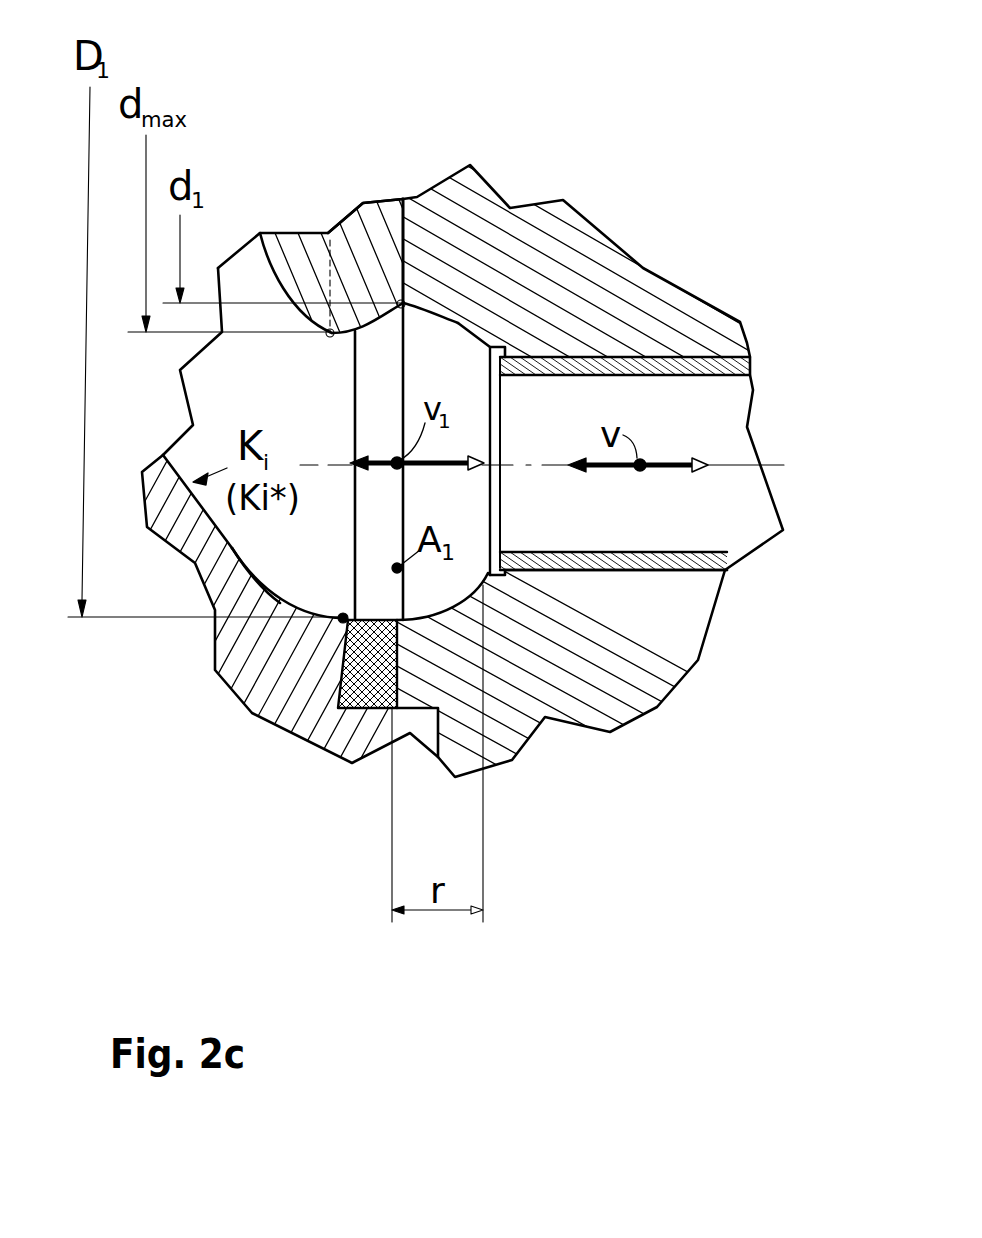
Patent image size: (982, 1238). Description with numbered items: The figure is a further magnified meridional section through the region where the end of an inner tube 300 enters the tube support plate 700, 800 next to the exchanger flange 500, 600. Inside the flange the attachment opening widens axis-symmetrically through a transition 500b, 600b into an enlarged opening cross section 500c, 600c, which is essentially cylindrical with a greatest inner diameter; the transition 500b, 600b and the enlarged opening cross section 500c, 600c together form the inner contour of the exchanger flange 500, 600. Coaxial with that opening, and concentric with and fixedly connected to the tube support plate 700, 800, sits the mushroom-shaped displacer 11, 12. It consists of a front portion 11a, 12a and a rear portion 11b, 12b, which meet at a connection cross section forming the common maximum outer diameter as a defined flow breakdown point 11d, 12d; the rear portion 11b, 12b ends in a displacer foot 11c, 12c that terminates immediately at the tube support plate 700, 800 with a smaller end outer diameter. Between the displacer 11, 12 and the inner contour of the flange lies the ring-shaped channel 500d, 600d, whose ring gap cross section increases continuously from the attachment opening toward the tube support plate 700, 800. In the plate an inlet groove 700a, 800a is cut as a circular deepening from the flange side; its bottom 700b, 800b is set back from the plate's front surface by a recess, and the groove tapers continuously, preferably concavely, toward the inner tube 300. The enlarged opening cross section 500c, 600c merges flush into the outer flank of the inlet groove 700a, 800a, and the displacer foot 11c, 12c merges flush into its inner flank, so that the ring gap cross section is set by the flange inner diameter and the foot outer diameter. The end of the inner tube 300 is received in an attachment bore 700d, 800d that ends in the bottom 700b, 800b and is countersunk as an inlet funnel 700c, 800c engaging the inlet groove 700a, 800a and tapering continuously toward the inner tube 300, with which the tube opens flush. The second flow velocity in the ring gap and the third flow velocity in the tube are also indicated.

The displacer 11 is at (311, 325).
The front portion 11a is at (287, 258).
The rear portion 11b is at (347, 255).
The displacer foot 11c is at (400, 260).
The flow breakdown point 11d is at (327, 336).
The displacer 12 is at (311, 325).
The front portion 12a is at (273, 181).
The rear portion 12b is at (382, 145).
The displacer foot 12c is at (352, 396).
The flow breakdown point 12d is at (307, 365).
The inner tube 300 is at (607, 518).
The exchanger flange 500 is at (265, 701).
The transition 500b is at (235, 560).
The enlarged opening cross section 500c is at (333, 603).
The ring-shaped channel 500d is at (258, 530).
The exchanger flange 600 is at (265, 701).
The transition 600b is at (170, 694).
The enlarged opening cross section 600c is at (204, 746).
The ring-shaped channel 600d is at (161, 600).
The tube support plate 700 is at (610, 476).
The inlet groove 700a is at (447, 357).
The bottom 700b is at (487, 518).
The inlet funnel 700c is at (458, 323).
The attachment bore 700d is at (662, 570).
The tube support plate 800 is at (610, 476).
The inlet groove 800a is at (633, 196).
The bottom 800b is at (543, 650).
The inlet funnel 800c is at (475, 179).
The attachment bore 800d is at (656, 672).